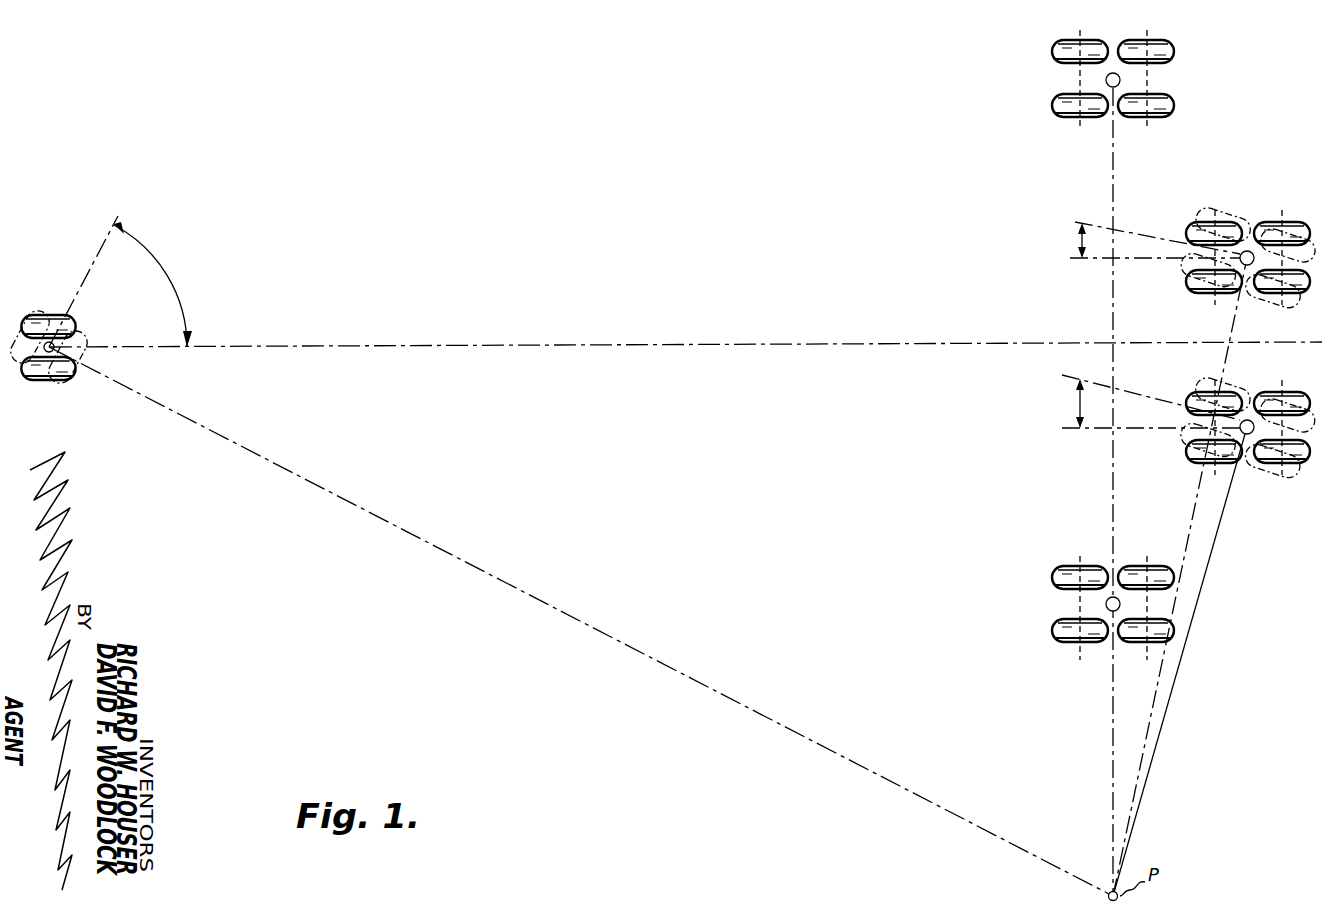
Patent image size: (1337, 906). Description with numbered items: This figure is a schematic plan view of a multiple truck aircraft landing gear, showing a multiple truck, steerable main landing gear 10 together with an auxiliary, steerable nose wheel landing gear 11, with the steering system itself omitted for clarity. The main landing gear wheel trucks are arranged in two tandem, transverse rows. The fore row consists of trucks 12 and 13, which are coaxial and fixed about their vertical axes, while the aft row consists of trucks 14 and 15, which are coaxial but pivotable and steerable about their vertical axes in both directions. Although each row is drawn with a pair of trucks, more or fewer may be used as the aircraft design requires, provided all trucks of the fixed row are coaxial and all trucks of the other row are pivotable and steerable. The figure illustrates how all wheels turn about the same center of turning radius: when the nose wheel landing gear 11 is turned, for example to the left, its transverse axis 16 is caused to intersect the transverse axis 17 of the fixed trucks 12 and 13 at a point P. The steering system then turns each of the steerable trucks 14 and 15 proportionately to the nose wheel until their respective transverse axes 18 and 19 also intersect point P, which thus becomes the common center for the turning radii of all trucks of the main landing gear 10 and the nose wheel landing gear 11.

The main landing gear 10 is at (912, 213).
The nose wheel landing gear 11 is at (186, 244).
The fore row truck 12 is at (1060, 574).
The fore row truck 13 is at (1058, 117).
The aft row truck 14 is at (1196, 466).
The aft row truck 15 is at (1210, 294).
The transverse axis of nose wheel 16 is at (500, 590).
The transverse axis of fixed trucks 17 is at (1112, 730).
The transverse axis of steerable truck 18 is at (1160, 745).
The transverse axis of steerable truck 19 is at (1155, 709).